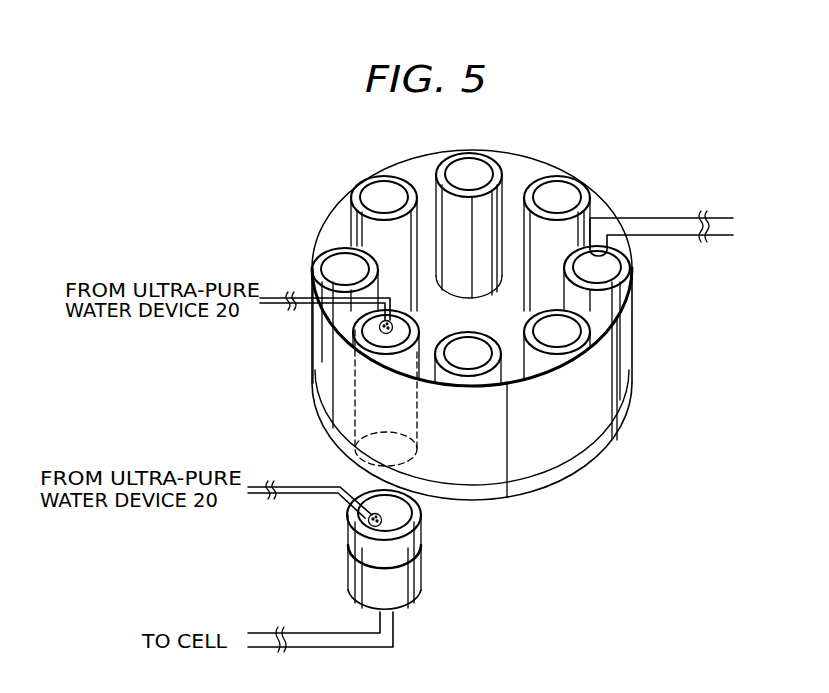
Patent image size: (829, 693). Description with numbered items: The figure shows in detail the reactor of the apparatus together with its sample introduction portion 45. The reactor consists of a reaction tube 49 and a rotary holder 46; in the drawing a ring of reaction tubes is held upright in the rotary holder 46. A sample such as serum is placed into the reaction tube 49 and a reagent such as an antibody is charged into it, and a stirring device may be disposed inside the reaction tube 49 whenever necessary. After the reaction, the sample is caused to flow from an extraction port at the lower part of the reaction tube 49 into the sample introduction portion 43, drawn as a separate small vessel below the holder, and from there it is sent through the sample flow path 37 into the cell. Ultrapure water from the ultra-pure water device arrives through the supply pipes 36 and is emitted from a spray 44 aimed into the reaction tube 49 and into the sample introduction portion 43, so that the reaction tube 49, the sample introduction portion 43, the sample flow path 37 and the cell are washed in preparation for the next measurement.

The reaction tube 49 is at (350, 210).
The rotary holder 46 is at (530, 488).
The sample introduction portion 45 is at (653, 222).
The ultra-pure water supply pipe 36 is at (297, 307).
The spray 44 is at (358, 342).
The sample introduction portion 43 is at (408, 583).
The sample flow path 37 is at (315, 637).